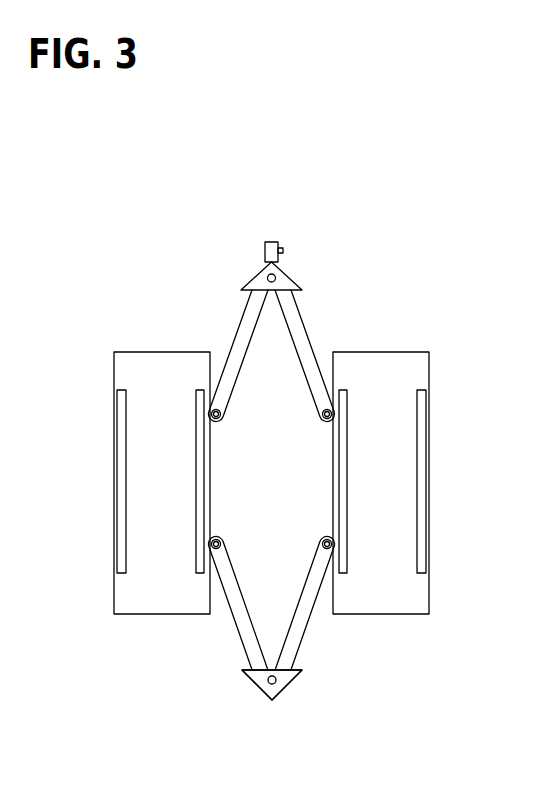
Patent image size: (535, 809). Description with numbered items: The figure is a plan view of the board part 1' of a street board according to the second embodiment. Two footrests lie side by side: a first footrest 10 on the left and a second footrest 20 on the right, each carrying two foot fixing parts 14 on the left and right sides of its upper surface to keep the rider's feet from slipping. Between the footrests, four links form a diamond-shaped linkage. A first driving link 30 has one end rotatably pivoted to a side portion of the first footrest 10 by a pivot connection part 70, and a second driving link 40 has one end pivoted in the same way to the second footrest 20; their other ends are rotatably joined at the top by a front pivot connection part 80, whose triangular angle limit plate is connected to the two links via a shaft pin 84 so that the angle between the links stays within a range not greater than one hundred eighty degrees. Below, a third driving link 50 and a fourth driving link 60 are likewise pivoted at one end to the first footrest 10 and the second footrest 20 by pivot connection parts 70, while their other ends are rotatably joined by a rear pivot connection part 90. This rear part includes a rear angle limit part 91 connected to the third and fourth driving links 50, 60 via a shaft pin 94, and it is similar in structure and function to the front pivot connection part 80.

The board part 1' is at (98, 155).
The first footrest 10 is at (113, 597).
The foot fixing part 14 is at (200, 474).
The second footrest 20 is at (430, 597).
The first driving link 30 is at (240, 357).
The second driving link 40 is at (303, 357).
The third driving link 50 is at (240, 612).
The fourth driving link 60 is at (305, 612).
The pivot connection part 70 is at (326, 420).
The front pivot connection part 80 is at (303, 268).
The shaft pin 84 is at (276, 279).
The rear pivot connection part 90 is at (240, 683).
The rear angle limit part 91 is at (264, 693).
The shaft pin 94 is at (276, 680).